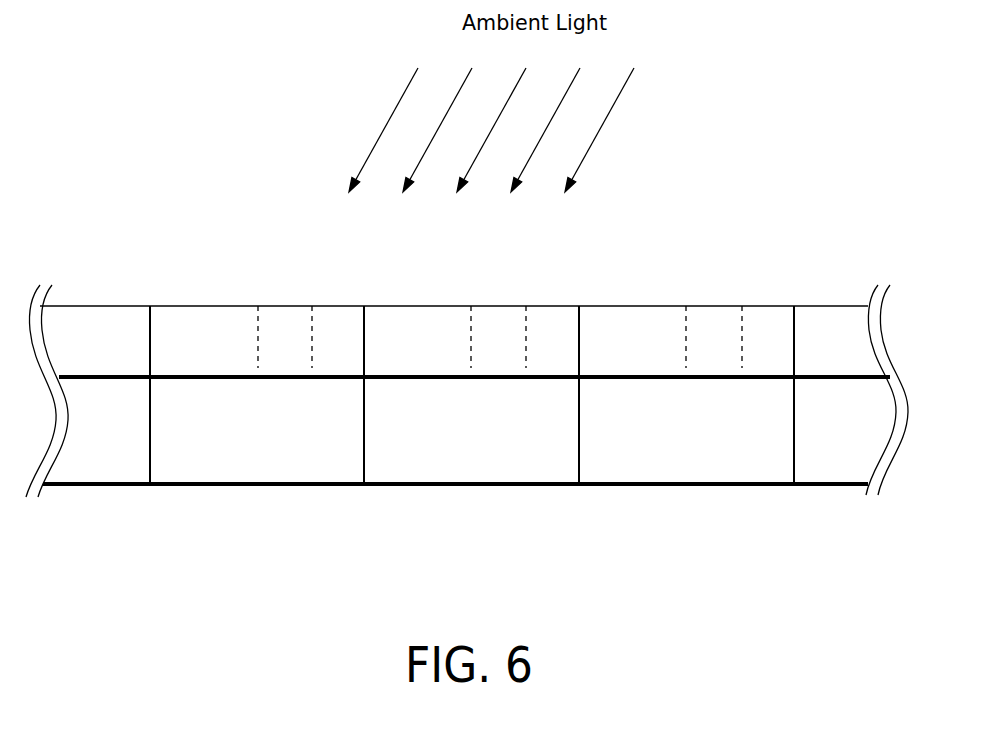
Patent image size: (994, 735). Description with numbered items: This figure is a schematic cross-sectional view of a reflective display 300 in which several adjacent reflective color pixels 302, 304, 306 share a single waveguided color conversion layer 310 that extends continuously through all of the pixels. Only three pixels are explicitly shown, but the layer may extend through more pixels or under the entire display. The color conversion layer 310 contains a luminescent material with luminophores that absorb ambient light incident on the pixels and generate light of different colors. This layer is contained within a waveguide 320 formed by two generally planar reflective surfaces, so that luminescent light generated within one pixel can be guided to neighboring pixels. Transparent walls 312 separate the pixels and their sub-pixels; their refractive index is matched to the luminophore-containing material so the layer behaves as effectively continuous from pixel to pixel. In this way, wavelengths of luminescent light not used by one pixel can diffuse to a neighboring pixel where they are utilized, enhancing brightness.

The display 300 is at (271, 151).
The reflective color pixel 302 is at (223, 306).
The reflective color pixel 304 is at (517, 306).
The reflective color pixel 306 is at (727, 306).
The waveguided color conversion layer 310 is at (302, 452).
The transparent walls 312 is at (579, 427).
The waveguide 320 is at (238, 377).